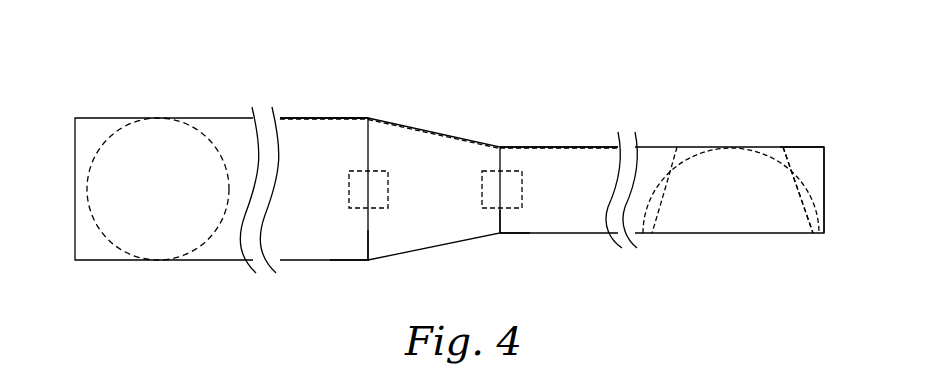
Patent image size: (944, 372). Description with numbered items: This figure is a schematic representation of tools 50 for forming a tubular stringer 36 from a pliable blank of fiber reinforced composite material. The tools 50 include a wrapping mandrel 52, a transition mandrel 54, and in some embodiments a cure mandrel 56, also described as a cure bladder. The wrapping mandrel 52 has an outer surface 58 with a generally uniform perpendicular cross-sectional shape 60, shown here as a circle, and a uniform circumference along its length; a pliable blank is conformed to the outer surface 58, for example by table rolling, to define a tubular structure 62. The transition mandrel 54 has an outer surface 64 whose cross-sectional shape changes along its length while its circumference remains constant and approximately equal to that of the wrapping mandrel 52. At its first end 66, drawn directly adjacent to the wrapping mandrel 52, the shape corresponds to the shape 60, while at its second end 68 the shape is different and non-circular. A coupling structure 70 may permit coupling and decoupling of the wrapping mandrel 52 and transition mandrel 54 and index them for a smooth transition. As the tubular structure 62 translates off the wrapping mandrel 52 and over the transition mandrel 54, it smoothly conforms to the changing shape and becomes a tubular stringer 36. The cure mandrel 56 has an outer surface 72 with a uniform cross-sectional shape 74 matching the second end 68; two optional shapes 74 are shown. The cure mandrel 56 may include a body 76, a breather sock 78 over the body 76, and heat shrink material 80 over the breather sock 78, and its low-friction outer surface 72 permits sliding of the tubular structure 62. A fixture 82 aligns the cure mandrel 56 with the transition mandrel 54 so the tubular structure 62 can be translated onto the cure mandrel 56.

The tools 50 is at (645, 40).
The wrapping mandrel 52 is at (298, 117).
The transition mandrel 54 is at (415, 129).
The cure mandrel 56 is at (597, 147).
The outer surface 58 is at (324, 189).
The cross-sectional shape 60 is at (205, 133).
The tubular structure 62 is at (345, 118).
The outer surface 64 is at (434, 189).
The first end 66 is at (368, 245).
The second end 68 is at (503, 222).
The coupling structure 70 is at (349, 185).
The outer surface 72 is at (559, 190).
The cross-sectional shape 74 is at (693, 157).
The body 76 is at (826, 165).
The breather sock 78 is at (812, 147).
The heat shrink material 80 is at (790, 147).
The fixture 82 is at (482, 178).
The tubular stringer 36 is at (523, 147).